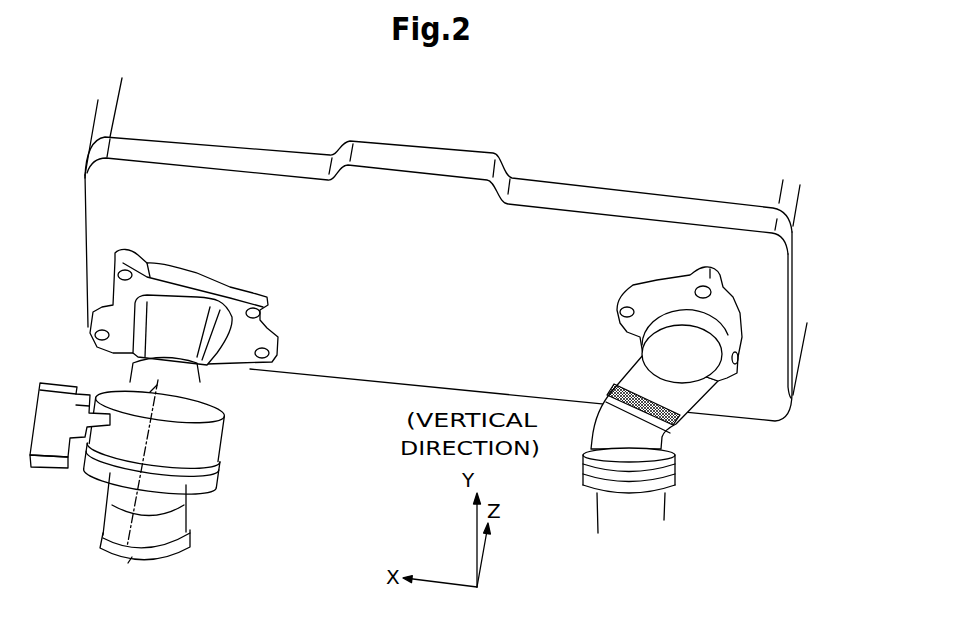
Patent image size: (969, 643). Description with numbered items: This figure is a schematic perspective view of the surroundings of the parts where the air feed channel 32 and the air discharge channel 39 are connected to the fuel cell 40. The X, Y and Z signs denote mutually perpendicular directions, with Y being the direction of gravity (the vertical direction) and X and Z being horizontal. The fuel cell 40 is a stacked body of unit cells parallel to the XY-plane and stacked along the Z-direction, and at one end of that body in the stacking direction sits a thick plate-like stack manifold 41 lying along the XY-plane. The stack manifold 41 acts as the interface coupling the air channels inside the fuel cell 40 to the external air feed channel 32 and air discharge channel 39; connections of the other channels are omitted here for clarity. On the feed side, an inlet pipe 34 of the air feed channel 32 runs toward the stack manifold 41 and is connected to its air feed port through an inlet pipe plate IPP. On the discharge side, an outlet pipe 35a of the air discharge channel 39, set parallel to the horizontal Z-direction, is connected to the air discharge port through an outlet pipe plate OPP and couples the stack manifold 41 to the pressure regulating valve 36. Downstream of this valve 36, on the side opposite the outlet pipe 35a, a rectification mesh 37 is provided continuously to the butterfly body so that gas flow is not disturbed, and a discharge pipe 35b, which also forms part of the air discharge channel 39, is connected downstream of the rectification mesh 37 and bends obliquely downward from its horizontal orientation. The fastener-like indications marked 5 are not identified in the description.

The fastening bolt 5 is at (157, 384).
The air feed channel 32 is at (723, 508).
The inlet pipe 34 is at (680, 418).
The outlet pipe 35a is at (192, 397).
The discharge pipe 35b is at (187, 508).
The pressure regulating valve 36 is at (226, 452).
The rectification mesh 37 is at (221, 485).
The air discharge channel 39 is at (245, 545).
The fuel cell 40 is at (789, 427).
The stack manifold 41 is at (664, 205).
The outlet pipe plate OPP is at (240, 273).
The inlet pipe plate IPP is at (640, 276).